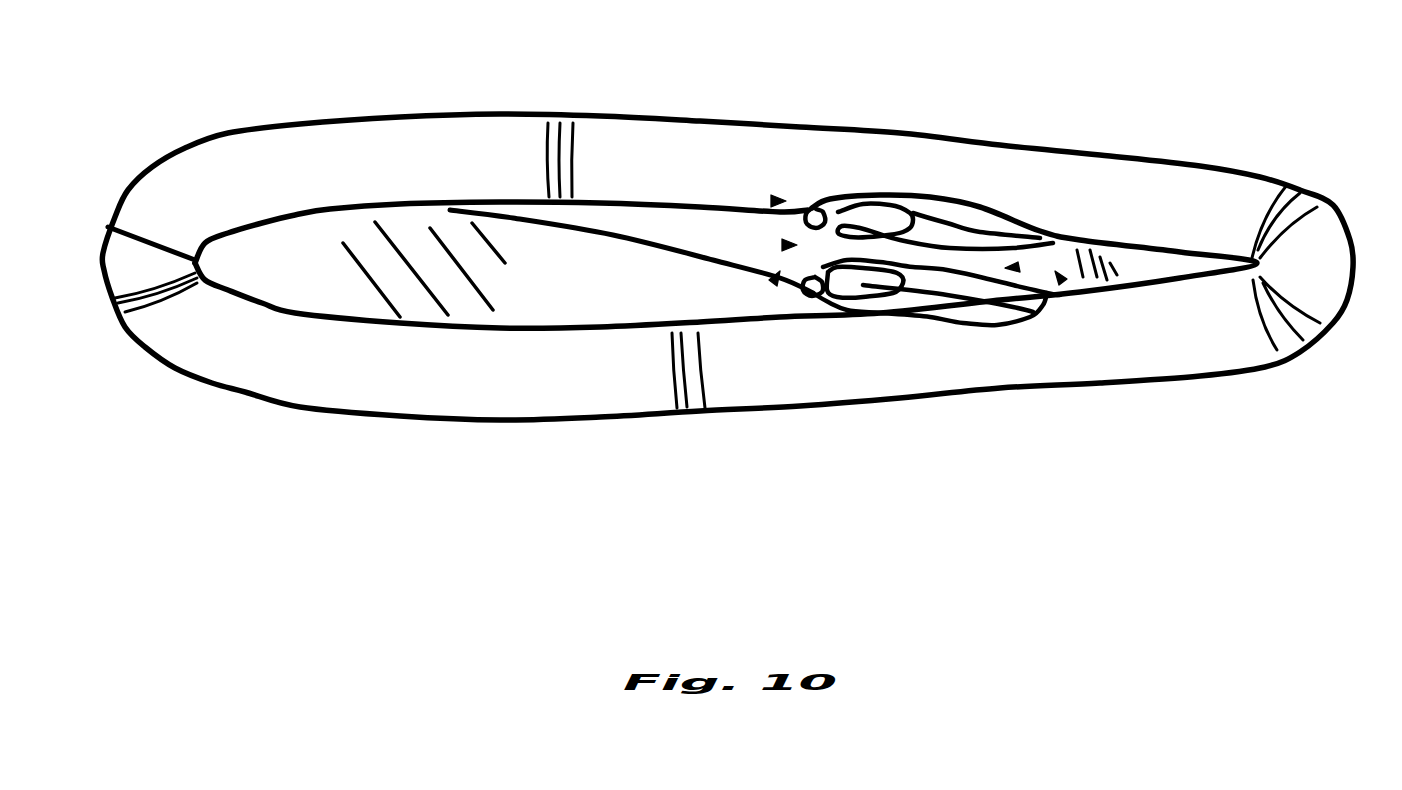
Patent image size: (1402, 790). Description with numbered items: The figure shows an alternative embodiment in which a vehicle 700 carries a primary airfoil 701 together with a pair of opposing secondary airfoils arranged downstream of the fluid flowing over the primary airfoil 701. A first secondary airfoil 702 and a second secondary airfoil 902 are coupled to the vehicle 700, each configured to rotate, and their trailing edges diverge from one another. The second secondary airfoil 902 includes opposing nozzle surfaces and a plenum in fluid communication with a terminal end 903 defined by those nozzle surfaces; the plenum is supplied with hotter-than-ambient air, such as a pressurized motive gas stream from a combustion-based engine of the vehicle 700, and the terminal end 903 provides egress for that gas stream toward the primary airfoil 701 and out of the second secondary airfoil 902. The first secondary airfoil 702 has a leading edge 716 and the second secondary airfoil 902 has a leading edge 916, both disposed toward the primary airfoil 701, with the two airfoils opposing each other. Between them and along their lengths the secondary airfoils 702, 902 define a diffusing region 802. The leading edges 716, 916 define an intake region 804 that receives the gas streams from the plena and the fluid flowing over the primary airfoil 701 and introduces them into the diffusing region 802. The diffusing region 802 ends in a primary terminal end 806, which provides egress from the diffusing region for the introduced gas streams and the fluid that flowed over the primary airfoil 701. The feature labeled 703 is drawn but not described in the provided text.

The vehicle 700 is at (347, 163).
The primary airfoil 701 is at (278, 286).
The first secondary airfoil 702 is at (997, 208).
The upper curl 703 is at (820, 205).
The leading edge 716 is at (773, 200).
The diffusing region 802 is at (1013, 267).
The intake region 804 is at (783, 245).
The primary terminal end 806 is at (1062, 280).
The second secondary airfoil 902 is at (972, 318).
The terminal end 903 is at (812, 278).
The leading edge 916 is at (767, 277).